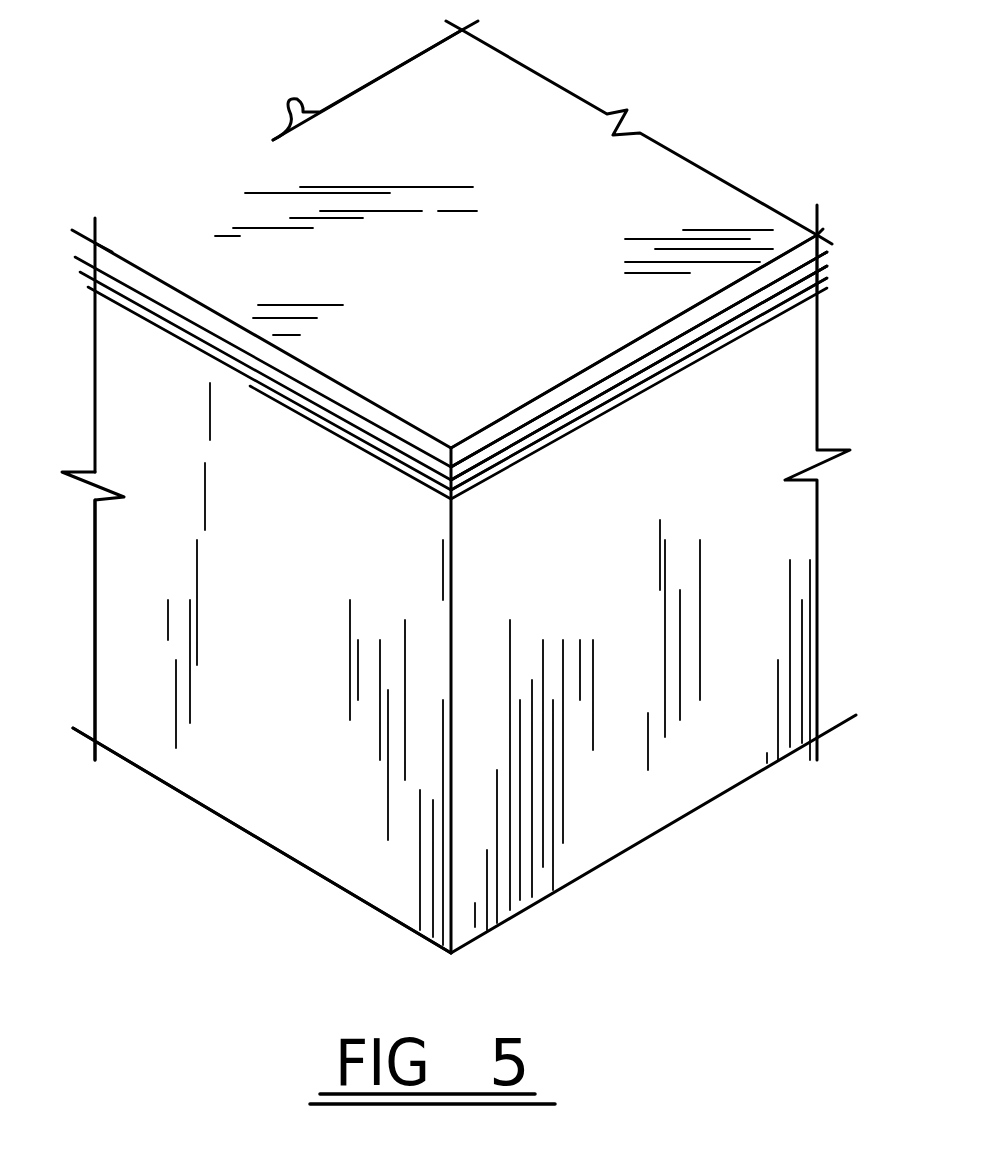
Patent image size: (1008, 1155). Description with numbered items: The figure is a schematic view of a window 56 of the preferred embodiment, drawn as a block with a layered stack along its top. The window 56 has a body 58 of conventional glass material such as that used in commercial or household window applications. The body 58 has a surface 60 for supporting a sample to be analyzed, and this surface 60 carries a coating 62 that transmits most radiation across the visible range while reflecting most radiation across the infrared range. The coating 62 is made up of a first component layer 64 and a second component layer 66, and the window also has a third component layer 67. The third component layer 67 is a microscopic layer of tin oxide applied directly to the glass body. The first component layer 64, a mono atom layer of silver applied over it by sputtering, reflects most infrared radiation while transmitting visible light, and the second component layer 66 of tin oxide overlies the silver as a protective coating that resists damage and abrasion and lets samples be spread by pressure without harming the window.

The window 56 is at (646, 901).
The body 58 is at (323, 736).
The surface 60 is at (358, 322).
The coating 62 is at (854, 260).
The first component layer 64 is at (577, 400).
The second component layer 66 is at (622, 363).
The third component layer 67 is at (695, 352).